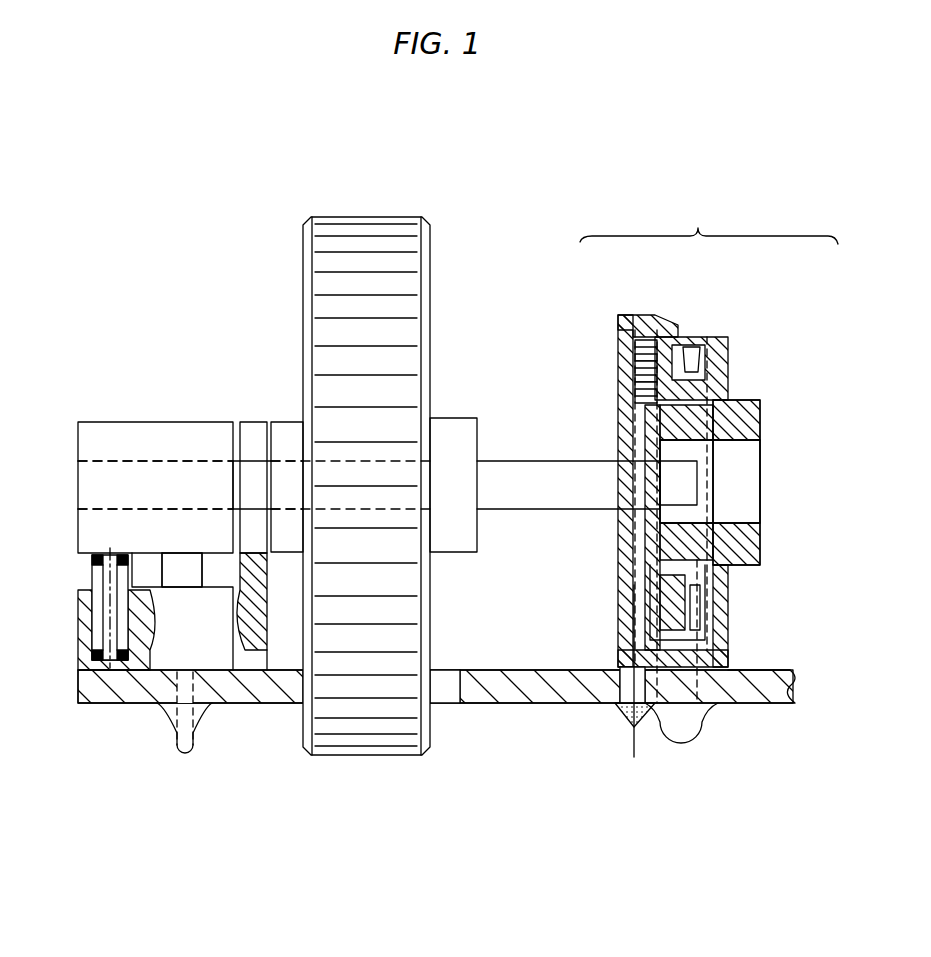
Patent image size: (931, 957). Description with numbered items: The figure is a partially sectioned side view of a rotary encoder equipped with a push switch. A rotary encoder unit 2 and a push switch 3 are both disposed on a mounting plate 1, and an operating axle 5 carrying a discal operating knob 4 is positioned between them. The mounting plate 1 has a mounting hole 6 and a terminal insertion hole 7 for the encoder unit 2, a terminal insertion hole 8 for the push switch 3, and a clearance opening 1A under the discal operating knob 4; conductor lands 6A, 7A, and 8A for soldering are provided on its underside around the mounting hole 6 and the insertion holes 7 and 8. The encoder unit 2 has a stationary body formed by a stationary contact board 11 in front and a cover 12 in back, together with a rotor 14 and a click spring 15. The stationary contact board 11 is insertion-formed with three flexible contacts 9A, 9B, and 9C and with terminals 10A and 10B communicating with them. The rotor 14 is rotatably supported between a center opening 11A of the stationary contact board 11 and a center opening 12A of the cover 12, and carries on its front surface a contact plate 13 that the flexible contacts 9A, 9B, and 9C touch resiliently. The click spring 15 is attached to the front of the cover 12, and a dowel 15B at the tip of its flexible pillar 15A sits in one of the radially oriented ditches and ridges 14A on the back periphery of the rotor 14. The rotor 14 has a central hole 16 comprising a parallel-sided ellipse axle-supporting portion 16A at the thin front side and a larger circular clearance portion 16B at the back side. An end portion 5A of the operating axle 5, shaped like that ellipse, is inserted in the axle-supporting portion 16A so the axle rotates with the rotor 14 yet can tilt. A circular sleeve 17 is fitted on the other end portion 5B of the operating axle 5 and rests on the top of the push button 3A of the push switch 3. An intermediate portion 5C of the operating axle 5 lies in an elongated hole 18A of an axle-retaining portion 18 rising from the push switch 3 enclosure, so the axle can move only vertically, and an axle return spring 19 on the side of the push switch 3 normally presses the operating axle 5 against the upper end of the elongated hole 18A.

The mounting plate 1 is at (498, 690).
The clearance opening 1A is at (443, 690).
The rotary encoder unit 2 is at (712, 221).
The push switch 3 is at (132, 678).
The push button 3A is at (175, 578).
The discal operating knob 4 is at (410, 262).
The operating axle 5 is at (527, 477).
The end portion 5A is at (617, 480).
The other end portion 5B is at (92, 496).
The intermediate portion 5C is at (278, 470).
The mounting hole 6 is at (735, 670).
The conductor land 6A is at (700, 712).
The terminal insertion hole 7 is at (618, 690).
The conductor land 7A is at (625, 717).
The terminal insertion hole 8 is at (205, 700).
The conductor land 8A is at (190, 712).
The flexible contact 9A is at (640, 392).
The flexible contact 9B is at (640, 369).
The flexible contact 9C is at (640, 348).
The terminal 10A is at (640, 740).
The terminal 10B is at (677, 516).
The stationary contact board 11 is at (622, 605).
The center opening 11A is at (620, 557).
The cover 12 is at (718, 622).
The center opening 12A is at (760, 541).
The contact plate 13 is at (655, 333).
The rotor 14 is at (703, 337).
The radially oriented ditches and ridges 14A is at (690, 341).
The click spring 15 is at (896, 402).
The flexible pillar 15A is at (715, 446).
The dowel 15B is at (690, 356).
The hole 16 is at (896, 509).
The axle-supporting portion 16A is at (623, 462).
The circular clearance portion 16B is at (750, 512).
The circular sleeve 17 is at (110, 436).
The axle-retaining portion 18 is at (253, 432).
The elongated hole 18A is at (258, 516).
The axle return spring 19 is at (95, 586).